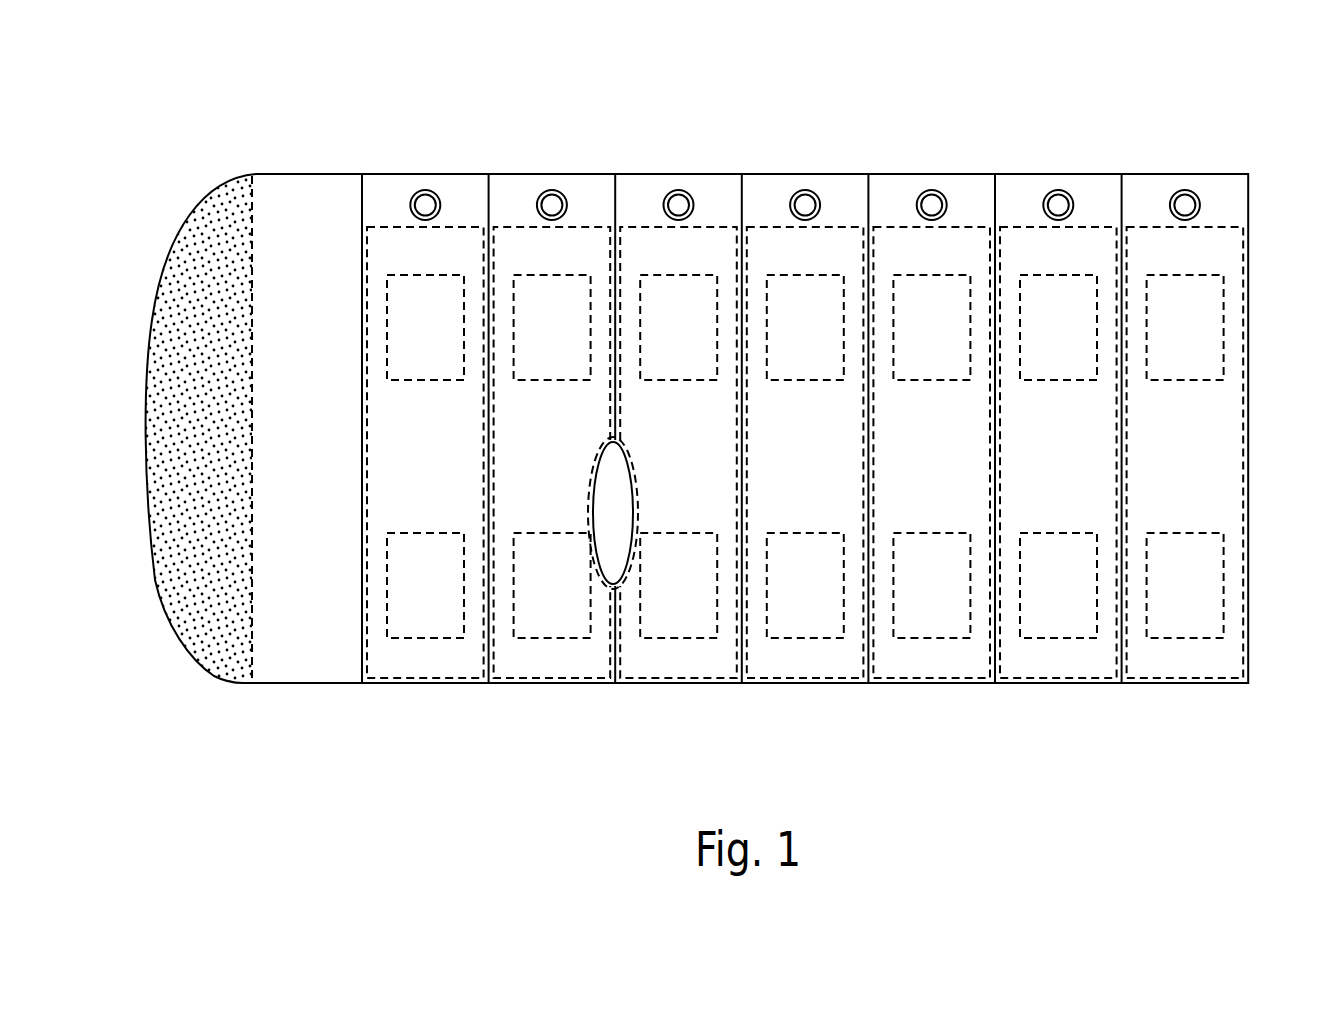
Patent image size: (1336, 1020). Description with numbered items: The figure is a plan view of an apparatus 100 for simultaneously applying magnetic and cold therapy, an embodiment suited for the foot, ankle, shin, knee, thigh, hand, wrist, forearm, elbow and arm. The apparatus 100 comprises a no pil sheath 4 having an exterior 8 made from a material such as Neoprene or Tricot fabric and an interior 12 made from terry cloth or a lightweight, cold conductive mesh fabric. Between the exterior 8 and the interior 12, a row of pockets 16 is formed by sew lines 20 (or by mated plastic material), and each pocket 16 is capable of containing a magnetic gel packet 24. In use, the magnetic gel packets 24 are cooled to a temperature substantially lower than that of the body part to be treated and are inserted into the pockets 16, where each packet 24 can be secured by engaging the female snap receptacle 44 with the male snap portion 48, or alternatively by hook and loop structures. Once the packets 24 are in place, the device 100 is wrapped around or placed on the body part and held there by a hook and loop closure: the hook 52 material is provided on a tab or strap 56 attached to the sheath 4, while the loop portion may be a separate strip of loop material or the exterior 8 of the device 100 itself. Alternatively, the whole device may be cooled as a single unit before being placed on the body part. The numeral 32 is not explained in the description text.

The apparatus for simultaneously applying magnetic and cold therapy 100 is at (549, 133).
The sheath 4 is at (1248, 635).
The exterior 8 is at (708, 200).
The interior 12 is at (462, 683).
The pockets 16 is at (961, 246).
The sew lines 20 is at (1123, 227).
The magnetic gel packet 24 is at (935, 657).
The lower compartment 32 is at (908, 615).
The female snap receptacle 44 is at (813, 200).
The male snap portion 48 is at (793, 197).
The hook 52 is at (208, 592).
The tab or strap 56 is at (288, 642).